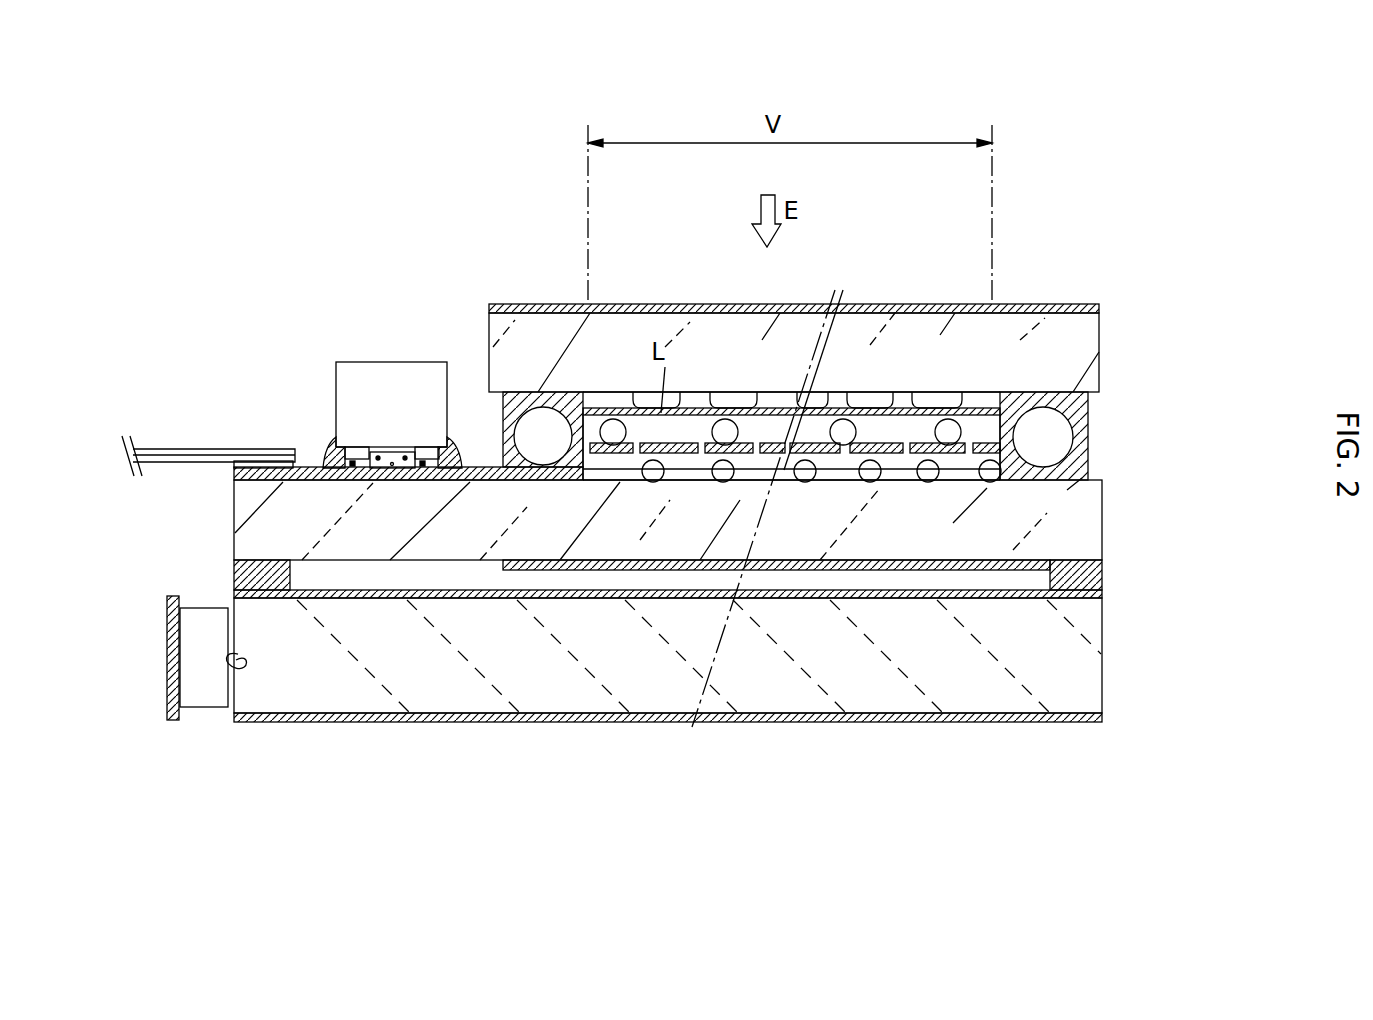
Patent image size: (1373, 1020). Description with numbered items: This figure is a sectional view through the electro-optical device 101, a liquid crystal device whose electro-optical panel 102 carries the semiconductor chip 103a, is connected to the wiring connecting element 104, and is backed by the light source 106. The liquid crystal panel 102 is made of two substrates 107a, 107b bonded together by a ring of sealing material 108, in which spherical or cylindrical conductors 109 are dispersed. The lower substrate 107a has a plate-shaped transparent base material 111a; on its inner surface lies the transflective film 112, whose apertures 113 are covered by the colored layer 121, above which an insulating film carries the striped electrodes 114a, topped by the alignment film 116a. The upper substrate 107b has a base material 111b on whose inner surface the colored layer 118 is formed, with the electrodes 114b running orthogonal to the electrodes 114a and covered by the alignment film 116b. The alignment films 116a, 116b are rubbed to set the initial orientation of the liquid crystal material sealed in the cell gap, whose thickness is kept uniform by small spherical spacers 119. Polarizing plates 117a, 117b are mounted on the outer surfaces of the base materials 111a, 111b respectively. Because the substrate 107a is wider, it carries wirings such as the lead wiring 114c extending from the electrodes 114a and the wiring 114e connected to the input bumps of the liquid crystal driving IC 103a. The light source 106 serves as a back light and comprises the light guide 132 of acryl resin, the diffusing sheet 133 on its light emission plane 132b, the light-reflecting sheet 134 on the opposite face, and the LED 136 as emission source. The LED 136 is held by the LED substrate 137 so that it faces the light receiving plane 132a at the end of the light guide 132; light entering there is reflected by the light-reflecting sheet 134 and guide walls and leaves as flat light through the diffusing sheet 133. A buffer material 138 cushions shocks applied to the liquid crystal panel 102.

The electro-optical device 101 is at (268, 312).
The electro-optical panel 102 is at (1248, 350).
The semiconductor chip 103a is at (398, 362).
The wiring connecting element 104 is at (182, 433).
The light source 106 is at (1118, 668).
The substrate 107a is at (1168, 460).
The substrate 107b is at (1168, 313).
The sealing material 108 is at (515, 440).
The conductor 109 is at (549, 452).
The base material 111a is at (1085, 525).
The base material 111b is at (1098, 352).
The transflective film 112 is at (757, 471).
The aperture 113 is at (712, 456).
The electrode 114a is at (867, 484).
The electrode 114b is at (845, 392).
The lead wiring 114c is at (486, 482).
The wiring 114e is at (311, 467).
The alignment film 116a is at (694, 420).
The alignment film 116b is at (768, 405).
The polarizing plate 117a is at (914, 570).
The polarizing plate 117b is at (540, 304).
The colored layer 118 is at (727, 397).
The spacer 119 is at (613, 419).
The colored layer 121 is at (644, 486).
The light guide 132 is at (571, 700).
The light receiving plane 132a is at (236, 660).
The light emission plane 132b is at (648, 592).
The diffusing sheet 133 is at (440, 590).
The light-reflecting sheet 134 is at (818, 724).
The LED 136 is at (203, 708).
The LED substrate 137 is at (166, 644).
The buffer material 138 is at (275, 572).